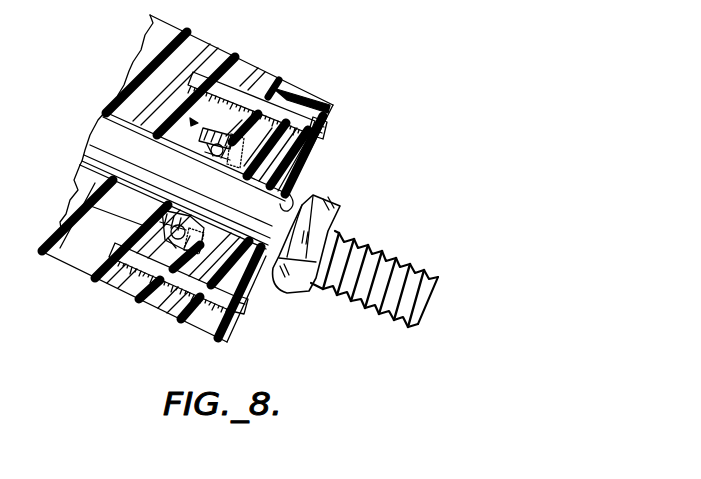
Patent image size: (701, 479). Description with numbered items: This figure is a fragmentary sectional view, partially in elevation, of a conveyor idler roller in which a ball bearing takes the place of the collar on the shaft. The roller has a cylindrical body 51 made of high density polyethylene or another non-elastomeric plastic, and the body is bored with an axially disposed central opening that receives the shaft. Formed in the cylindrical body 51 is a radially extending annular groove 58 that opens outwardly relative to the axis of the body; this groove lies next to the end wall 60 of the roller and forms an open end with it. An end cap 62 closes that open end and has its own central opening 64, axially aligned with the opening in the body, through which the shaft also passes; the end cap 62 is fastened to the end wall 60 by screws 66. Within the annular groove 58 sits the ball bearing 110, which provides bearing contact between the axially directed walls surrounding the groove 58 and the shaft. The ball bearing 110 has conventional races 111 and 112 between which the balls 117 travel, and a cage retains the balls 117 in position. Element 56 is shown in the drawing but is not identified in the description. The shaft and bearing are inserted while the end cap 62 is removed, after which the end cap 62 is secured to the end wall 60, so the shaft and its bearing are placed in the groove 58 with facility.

The cylindrical body 51 is at (166, 24).
The rail 56 is at (108, 137).
The annular groove 58 is at (207, 148).
The end wall 60 is at (277, 90).
The end cap 62 is at (313, 155).
The central opening 64 is at (297, 197).
The screws 66 is at (325, 129).
The ball bearing 110 is at (157, 100).
The race 111 is at (131, 293).
The race 112 is at (87, 205).
The balls 117 is at (117, 273).